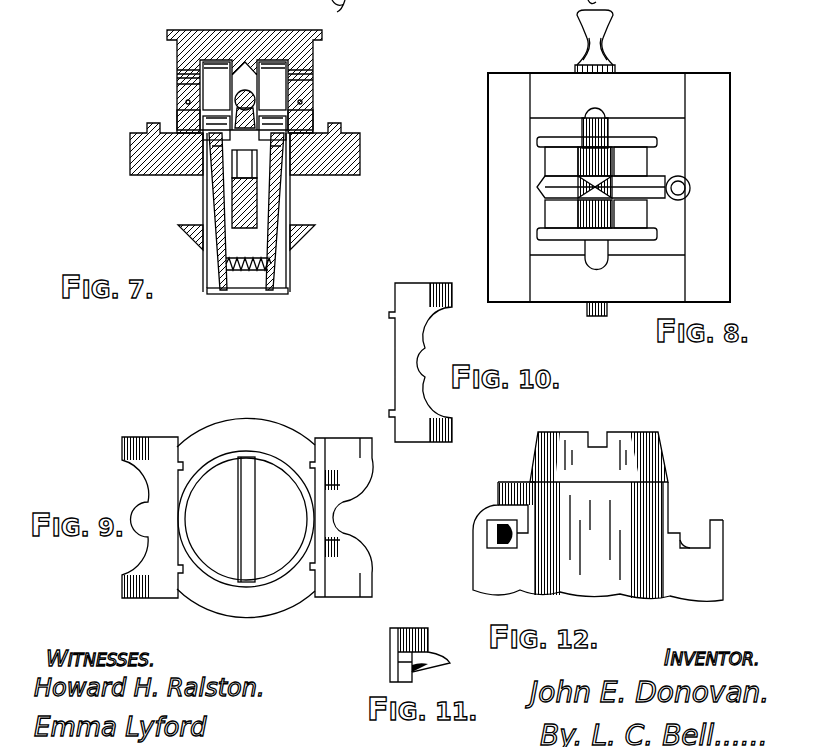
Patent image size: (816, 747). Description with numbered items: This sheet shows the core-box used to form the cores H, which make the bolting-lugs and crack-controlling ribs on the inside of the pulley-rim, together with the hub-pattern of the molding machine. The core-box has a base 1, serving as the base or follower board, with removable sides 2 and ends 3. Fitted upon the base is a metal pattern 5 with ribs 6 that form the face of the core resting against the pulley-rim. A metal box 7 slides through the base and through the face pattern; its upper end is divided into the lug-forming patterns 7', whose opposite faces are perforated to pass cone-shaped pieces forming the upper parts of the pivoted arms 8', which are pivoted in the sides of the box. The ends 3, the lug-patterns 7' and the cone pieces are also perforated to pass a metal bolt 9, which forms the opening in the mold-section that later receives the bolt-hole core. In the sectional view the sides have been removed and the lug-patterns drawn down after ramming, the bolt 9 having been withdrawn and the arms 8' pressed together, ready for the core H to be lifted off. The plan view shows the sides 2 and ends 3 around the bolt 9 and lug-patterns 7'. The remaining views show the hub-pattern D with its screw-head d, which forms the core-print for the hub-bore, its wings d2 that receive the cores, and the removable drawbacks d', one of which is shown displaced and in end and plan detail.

In FIG. 7, the core H is at (318, 37).
In FIG. 7, the metal pattern 5 is at (178, 124).
In FIG. 7, the lug-forming patterns 7' is at (244, 101).
In FIG. 8, the lug-forming patterns 7' is at (597, 217).
In FIG. 7, the ribs 6 is at (244, 128).
In FIG. 8, the ribs 6 is at (652, 178).
In FIG. 7, the base 1 is at (358, 158).
In FIG. 7, the metal box 7 is at (246, 213).
In FIG. 7, the pivoted arms 8' is at (245, 289).
In FIG. 8, the metal bolt 9 is at (600, 30).
In FIG. 8, the ends 3 is at (607, 189).
In FIG. 8, the sides 2 is at (609, 187).
In FIG. 9, the screw-head d is at (246, 519).
In FIG. 12, the screw-head d is at (609, 457).
In FIG. 10, the drawbacks d' is at (403, 362).
In FIG. 9, the drawbacks d' is at (152, 503).
In FIG. 11, the drawbacks d' is at (402, 655).
In FIG. 12, the drawbacks d' is at (495, 515).
In FIG. 9, the wings d2 is at (368, 578).
In FIG. 12, the wings d2 is at (717, 523).
In FIG. 9, the hub-pattern D is at (268, 605).
In FIG. 12, the hub-pattern D is at (598, 541).